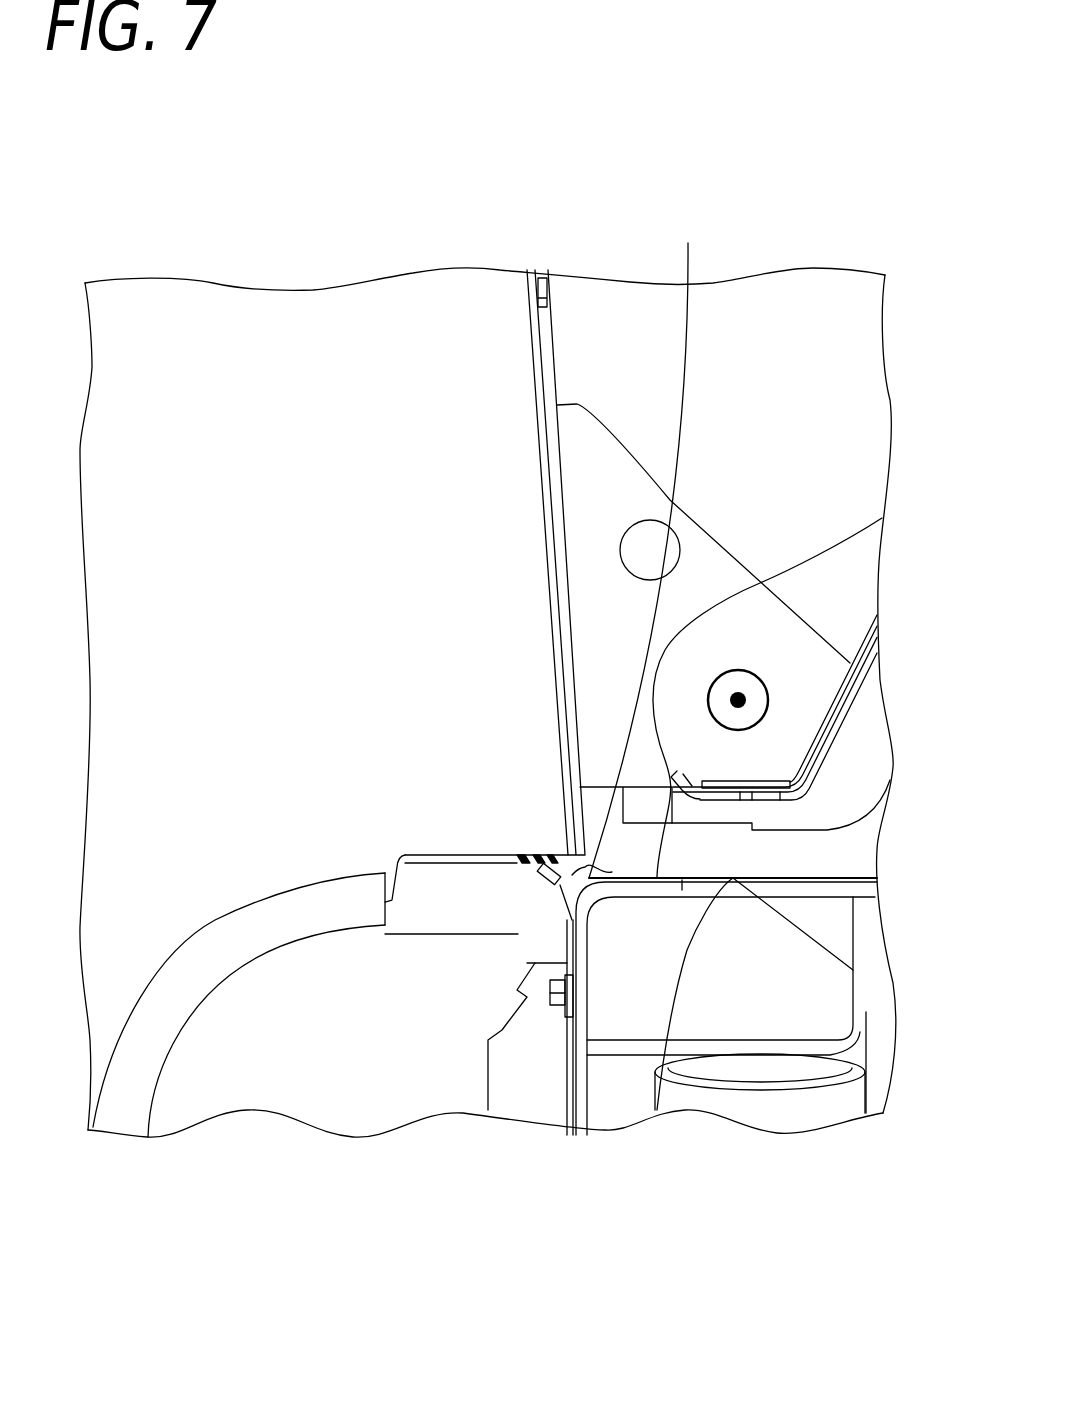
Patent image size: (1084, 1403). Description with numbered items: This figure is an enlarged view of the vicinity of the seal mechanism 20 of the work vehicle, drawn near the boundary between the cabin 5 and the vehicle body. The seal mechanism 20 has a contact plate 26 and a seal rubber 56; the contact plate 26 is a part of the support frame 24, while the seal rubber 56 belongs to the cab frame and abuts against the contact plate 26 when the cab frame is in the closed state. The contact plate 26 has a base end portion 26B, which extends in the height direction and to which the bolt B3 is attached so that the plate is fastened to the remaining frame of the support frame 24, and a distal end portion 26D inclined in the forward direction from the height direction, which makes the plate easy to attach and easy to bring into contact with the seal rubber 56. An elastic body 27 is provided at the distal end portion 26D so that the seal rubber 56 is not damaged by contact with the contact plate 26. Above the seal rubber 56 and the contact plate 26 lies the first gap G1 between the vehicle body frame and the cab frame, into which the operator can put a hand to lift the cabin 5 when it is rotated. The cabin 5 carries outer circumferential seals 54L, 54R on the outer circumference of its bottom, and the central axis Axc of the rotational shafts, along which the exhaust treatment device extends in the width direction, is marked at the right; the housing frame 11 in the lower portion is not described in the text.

The cabin 5 is at (542, 327).
The first gap G1 is at (644, 544).
The central axis Axc is at (738, 700).
The housing frame 11 is at (773, 992).
The support frame 24 is at (578, 1063).
The seal mechanism 20 is at (293, 582).
The seal rubber 56 is at (545, 857).
The elastic body 27 is at (532, 860).
The contact plate 26 is at (340, 727).
The distal end portion 26D is at (560, 907).
The base end portion 26B is at (527, 963).
The bolt B3 is at (550, 1000).
The outer circumferential seal 54L is at (122, 1098).
The outer circumferential seal 54R is at (239, 1005).